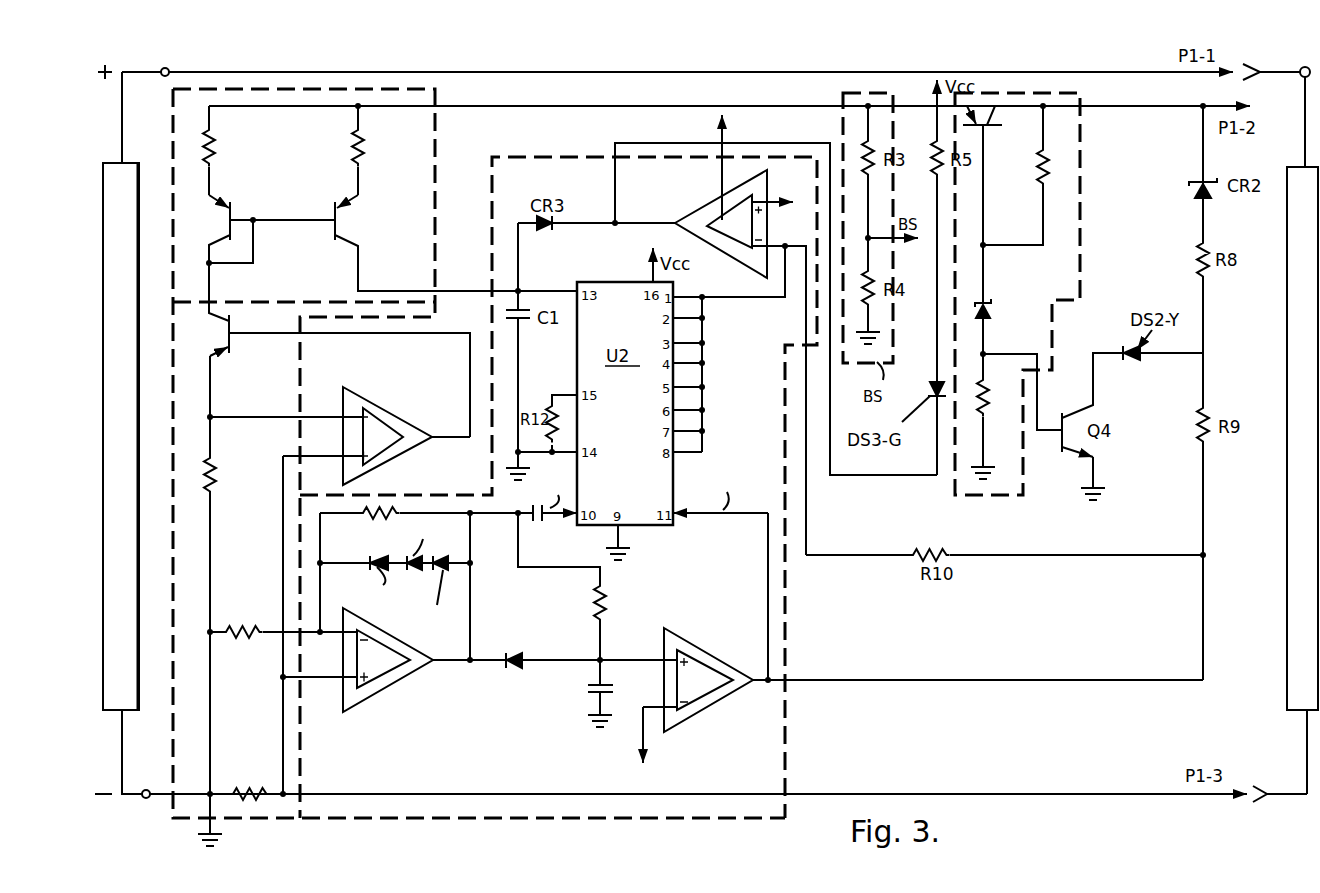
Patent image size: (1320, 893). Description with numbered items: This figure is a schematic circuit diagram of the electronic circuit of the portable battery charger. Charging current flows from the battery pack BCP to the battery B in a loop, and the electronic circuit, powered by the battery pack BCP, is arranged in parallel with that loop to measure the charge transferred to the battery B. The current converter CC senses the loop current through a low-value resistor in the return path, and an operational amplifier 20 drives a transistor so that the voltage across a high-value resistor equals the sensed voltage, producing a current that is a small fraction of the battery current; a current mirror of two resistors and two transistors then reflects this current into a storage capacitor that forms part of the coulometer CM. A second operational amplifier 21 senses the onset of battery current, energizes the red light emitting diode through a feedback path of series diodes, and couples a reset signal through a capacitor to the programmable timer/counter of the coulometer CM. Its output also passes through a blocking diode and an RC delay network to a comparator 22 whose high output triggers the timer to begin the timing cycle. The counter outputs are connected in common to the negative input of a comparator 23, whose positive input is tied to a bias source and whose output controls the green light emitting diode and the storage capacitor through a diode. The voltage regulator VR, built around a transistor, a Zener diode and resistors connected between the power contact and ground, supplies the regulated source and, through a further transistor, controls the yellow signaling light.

The operational amplifier 20 is at (387, 417).
The second operational amplifier 21 is at (383, 682).
The comparator 22 is at (710, 700).
The comparator 23 is at (733, 252).
The current converter CC is at (177, 320).
The coulometer CM is at (706, 639).
The voltage regulator VR is at (1073, 232).
The battery pack BCP is at (108, 598).
The battery B is at (1290, 658).